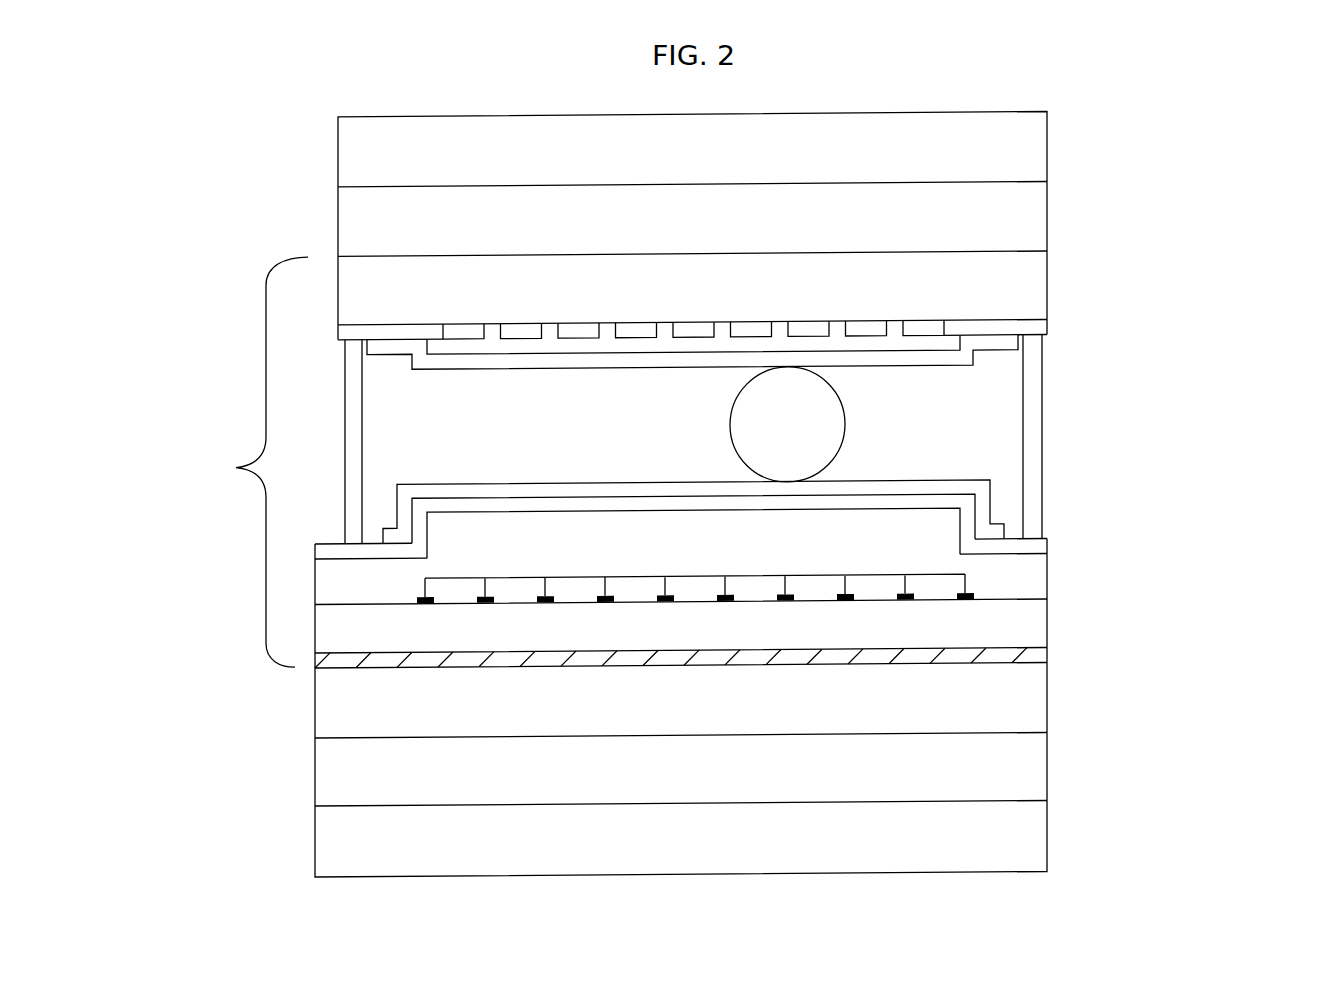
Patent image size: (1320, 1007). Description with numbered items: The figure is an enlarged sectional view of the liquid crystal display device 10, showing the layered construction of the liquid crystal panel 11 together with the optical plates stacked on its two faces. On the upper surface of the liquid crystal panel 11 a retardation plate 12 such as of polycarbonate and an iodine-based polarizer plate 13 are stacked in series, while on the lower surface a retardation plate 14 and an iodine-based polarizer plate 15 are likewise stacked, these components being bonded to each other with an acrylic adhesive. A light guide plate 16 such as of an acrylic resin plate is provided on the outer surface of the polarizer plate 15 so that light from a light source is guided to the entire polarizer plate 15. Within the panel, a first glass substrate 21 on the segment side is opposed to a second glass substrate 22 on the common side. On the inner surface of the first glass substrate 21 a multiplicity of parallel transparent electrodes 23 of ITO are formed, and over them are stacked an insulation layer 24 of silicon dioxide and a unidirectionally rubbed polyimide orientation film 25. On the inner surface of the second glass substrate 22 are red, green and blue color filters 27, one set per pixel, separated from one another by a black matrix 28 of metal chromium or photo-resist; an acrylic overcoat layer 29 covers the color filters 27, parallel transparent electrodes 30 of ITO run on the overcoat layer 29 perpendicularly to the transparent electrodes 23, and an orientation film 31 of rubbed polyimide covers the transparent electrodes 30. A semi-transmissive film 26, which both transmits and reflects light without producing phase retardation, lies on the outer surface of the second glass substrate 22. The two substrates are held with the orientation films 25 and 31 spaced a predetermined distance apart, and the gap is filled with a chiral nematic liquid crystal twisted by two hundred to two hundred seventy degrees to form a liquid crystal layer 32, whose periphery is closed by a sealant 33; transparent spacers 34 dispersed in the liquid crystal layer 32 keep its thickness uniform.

The liquid crystal display device 10 is at (1051, 93).
The liquid crystal panel 11 is at (247, 462).
The retardation plate 12 is at (1020, 223).
The polarizer plate 13 is at (1020, 165).
The retardation plate 14 is at (1030, 702).
The polarizer plate 15 is at (1030, 773).
The light guide plate 16 is at (1030, 840).
The first glass substrate 21 is at (1020, 290).
The second glass substrate 22 is at (1030, 622).
The transparent electrodes 23 is at (923, 336).
The insulation layer 24 is at (1040, 333).
The orientation film 25 is at (988, 348).
The semi-transmissive film 26 is at (1030, 659).
The color filters 27 is at (857, 584).
The black matrix 28 is at (897, 604).
The overcoat layer 29 is at (1030, 575).
The transparent electrodes 30 is at (1040, 546).
The orientation film 31 is at (982, 493).
The liquid crystal layer 32 is at (1003, 425).
The sealant 33 is at (1030, 455).
The transparent spacers 34 is at (828, 426).